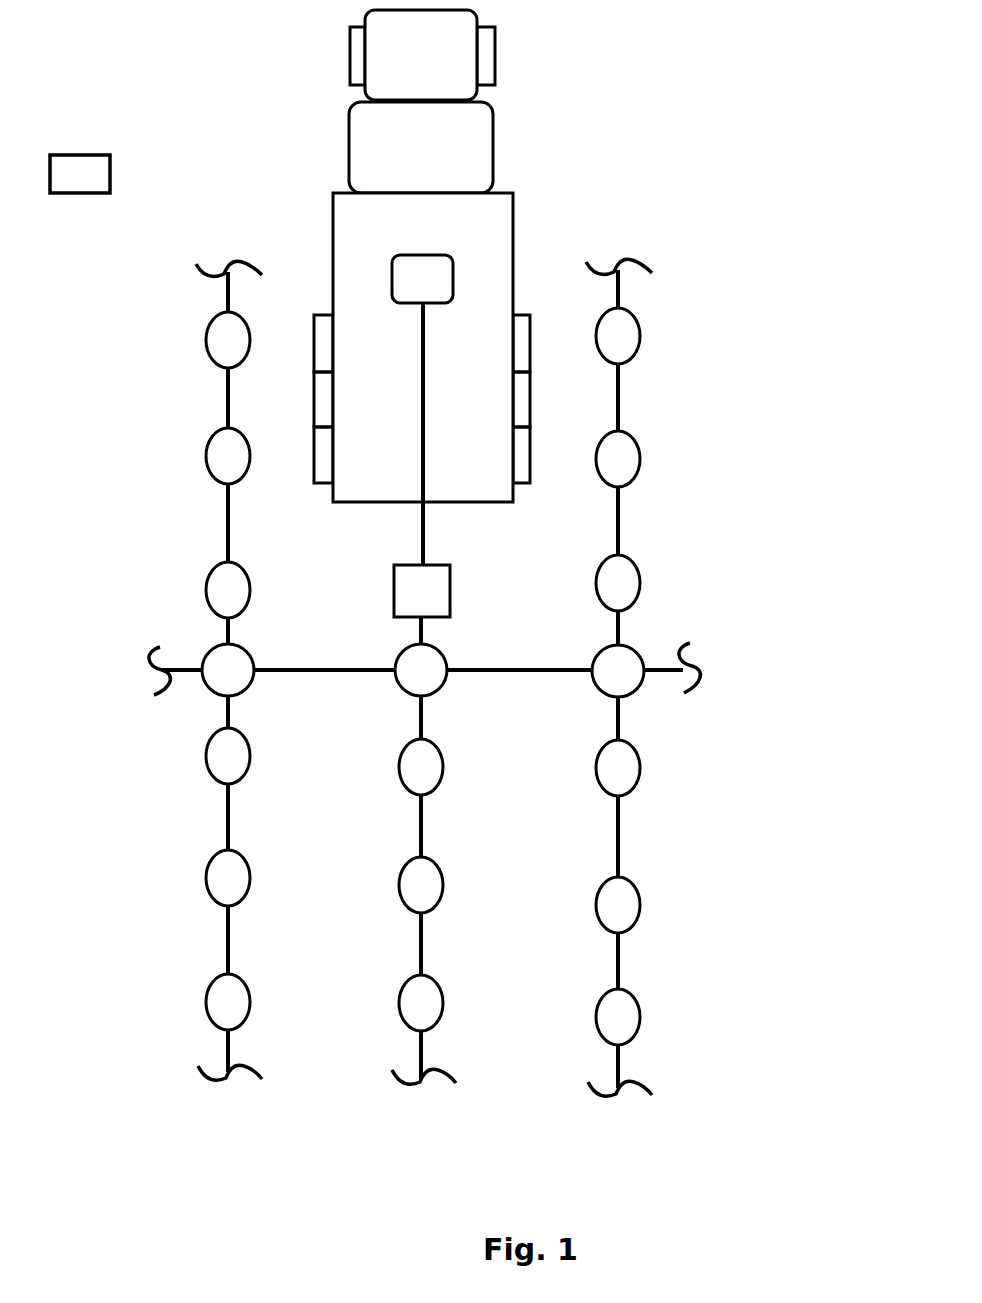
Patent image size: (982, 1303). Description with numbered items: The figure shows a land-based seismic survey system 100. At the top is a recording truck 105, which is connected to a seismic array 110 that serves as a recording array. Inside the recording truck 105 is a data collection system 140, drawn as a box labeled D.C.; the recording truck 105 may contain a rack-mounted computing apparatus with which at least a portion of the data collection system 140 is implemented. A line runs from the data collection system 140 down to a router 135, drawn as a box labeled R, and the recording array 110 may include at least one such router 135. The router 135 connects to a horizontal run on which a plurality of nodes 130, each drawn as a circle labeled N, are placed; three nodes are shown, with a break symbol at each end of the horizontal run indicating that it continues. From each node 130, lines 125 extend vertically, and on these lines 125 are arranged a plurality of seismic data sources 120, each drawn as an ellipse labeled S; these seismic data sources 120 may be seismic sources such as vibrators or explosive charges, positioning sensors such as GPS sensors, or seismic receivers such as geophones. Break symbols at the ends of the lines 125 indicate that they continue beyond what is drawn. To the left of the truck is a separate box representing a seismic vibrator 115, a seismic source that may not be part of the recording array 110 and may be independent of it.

The seismic survey system 100 is at (397, 607).
The recording truck 105 is at (449, 256).
The seismic array 110 is at (426, 709).
The seismic vibrator 115 is at (110, 163).
The seismic data sources 120 is at (244, 315).
The lines 125 is at (212, 245).
The nodes 130 is at (208, 650).
The router 135 is at (393, 569).
The data collection system 140 is at (452, 267).